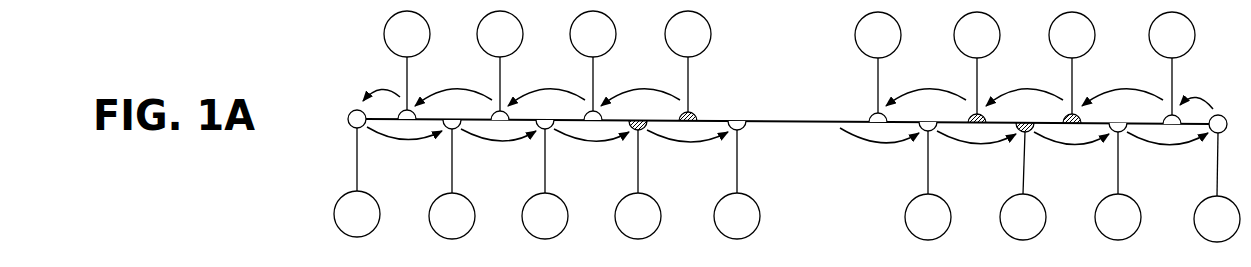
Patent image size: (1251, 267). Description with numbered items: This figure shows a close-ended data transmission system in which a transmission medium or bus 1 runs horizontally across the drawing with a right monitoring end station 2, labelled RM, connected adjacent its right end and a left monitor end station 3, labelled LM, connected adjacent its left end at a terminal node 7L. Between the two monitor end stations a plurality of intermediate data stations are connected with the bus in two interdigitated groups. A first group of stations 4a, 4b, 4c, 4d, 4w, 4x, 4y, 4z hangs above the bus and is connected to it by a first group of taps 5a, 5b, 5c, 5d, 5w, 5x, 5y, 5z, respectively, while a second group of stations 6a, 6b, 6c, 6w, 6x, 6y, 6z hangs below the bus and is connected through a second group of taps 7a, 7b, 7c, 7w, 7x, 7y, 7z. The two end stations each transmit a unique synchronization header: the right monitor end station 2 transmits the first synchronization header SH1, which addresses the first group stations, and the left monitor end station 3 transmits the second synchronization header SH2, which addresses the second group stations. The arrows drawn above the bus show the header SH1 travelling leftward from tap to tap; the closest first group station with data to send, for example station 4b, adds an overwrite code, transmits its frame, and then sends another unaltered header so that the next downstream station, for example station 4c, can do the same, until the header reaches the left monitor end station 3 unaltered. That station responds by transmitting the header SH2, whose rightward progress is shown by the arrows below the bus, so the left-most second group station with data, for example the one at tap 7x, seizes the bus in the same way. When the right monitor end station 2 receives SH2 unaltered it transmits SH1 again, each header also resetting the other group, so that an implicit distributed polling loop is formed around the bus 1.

The transmission medium or bus 1 is at (768, 121).
The right monitoring end station 2 is at (1197, 232).
The left monitor end station 3 is at (338, 199).
The left module LM is at (357, 182).
The right module RM is at (1217, 178).
The left terminal node 7L is at (349, 123).
The first group station 4a is at (1172, 63).
The first group station 4b is at (1072, 63).
The first group station 4c is at (977, 63).
The first group station 4d is at (878, 62).
The first group station 4w is at (688, 61).
The first group station 4x is at (593, 61).
The first group station 4y is at (500, 61).
The first group station 4z is at (407, 60).
The first group tap 5a is at (1169, 113).
The first group tap 5b is at (1075, 113).
The first group tap 5c is at (979, 112).
The first group tap 5d is at (875, 112).
The first group tap 5w is at (690, 110).
The first group tap 5x is at (595, 110).
The first group tap 5y is at (501, 110).
The first group tap 5z is at (408, 109).
The second group station 6a is at (1118, 186).
The second group station 6b is at (1023, 186).
The second group station 6c is at (928, 185).
The second group station 6w is at (737, 184).
The second group station 6x is at (638, 184).
The second group station 6y is at (545, 184).
The second group station 6z is at (452, 184).
The second group tap 7a is at (1124, 133).
The second group tap 7b is at (1019, 133).
The second group tap 7c is at (934, 132).
The second group tap 7w is at (743, 131).
The second group tap 7x is at (644, 131).
The second group tap 7y is at (551, 130).
The second group tap 7z is at (458, 130).
The first synchronization header SH1 is at (789, 86).
The second synchronization header SH2 is at (787, 156).